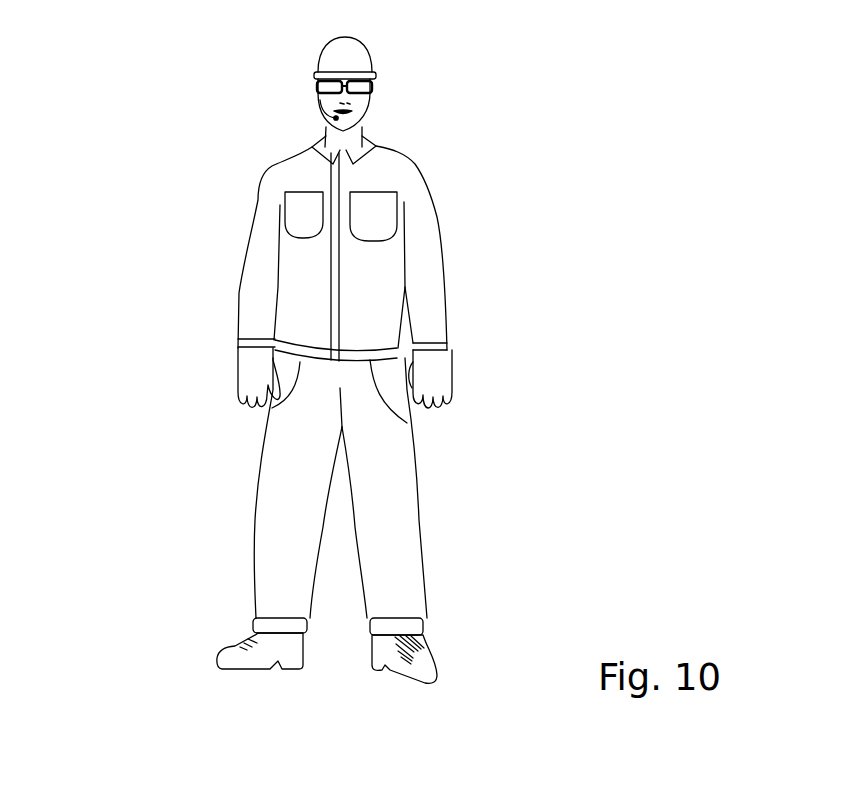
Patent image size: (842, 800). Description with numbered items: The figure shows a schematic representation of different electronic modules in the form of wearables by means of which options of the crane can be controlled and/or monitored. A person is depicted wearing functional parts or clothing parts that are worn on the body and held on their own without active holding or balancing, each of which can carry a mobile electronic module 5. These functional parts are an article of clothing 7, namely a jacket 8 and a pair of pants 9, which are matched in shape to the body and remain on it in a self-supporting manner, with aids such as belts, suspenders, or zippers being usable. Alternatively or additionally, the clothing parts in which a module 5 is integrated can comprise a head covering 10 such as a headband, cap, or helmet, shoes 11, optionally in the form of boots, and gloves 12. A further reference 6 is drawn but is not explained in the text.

The mobile electronic module 5 is at (237, 370).
The protective jacket 6 is at (437, 210).
The article of clothing 7 is at (400, 147).
The jacket 8 is at (368, 280).
The pair of pants 9 is at (388, 491).
The head covering 10 is at (353, 63).
The shoes 11 is at (422, 668).
The gloves 12 is at (438, 358).